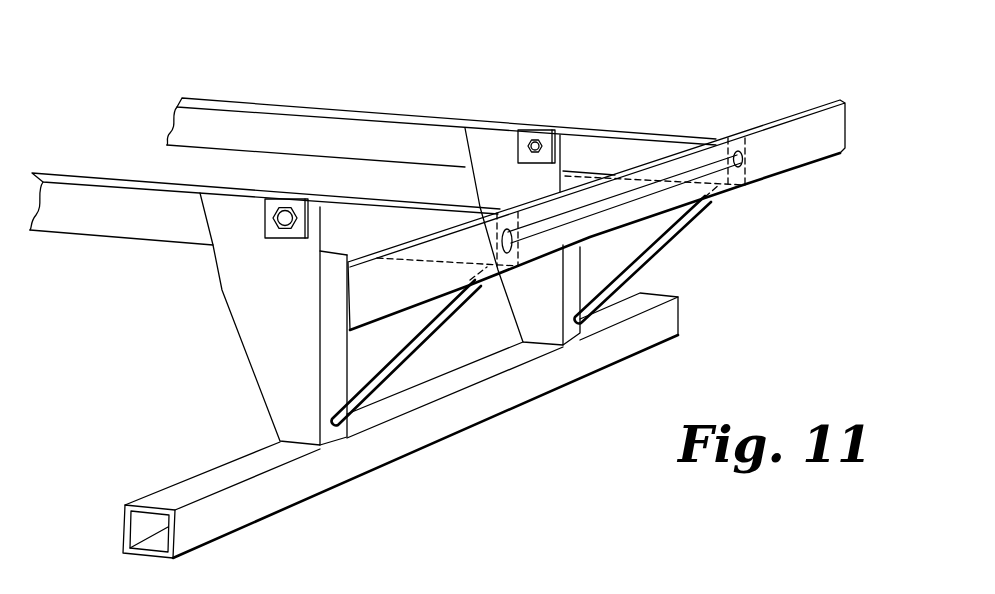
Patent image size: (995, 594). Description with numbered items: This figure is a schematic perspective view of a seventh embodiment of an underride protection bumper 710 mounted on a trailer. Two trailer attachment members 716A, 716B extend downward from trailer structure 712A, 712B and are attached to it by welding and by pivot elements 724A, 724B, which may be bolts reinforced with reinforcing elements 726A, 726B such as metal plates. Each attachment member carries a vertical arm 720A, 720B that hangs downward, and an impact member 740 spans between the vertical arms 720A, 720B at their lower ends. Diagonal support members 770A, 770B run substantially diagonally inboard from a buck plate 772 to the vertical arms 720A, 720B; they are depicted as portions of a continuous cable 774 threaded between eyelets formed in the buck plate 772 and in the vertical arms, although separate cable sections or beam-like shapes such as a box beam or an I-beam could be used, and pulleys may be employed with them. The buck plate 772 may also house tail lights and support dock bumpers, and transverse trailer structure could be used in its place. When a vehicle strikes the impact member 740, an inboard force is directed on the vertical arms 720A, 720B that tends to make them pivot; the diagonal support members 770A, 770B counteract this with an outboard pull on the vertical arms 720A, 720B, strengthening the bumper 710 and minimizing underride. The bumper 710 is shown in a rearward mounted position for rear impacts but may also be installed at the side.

The underride protection bumper 710 is at (88, 448).
The trailer structure 712A is at (107, 234).
The trailer structure 712B is at (424, 111).
The trailer attachment member 716A is at (247, 362).
The trailer attachment member 716B is at (505, 296).
The vertical arm 720A is at (297, 350).
The vertical arm 720B is at (532, 260).
The pivot element 724A is at (273, 229).
The pivot element 724B is at (541, 140).
The reinforcing element 726A is at (297, 207).
The reinforcing element 726B is at (524, 132).
The impact member 740 is at (563, 388).
The diagonal support member 770A is at (397, 364).
The diagonal support member 770B is at (675, 228).
The buck plate 772 is at (795, 170).
The cable 774 is at (630, 196).